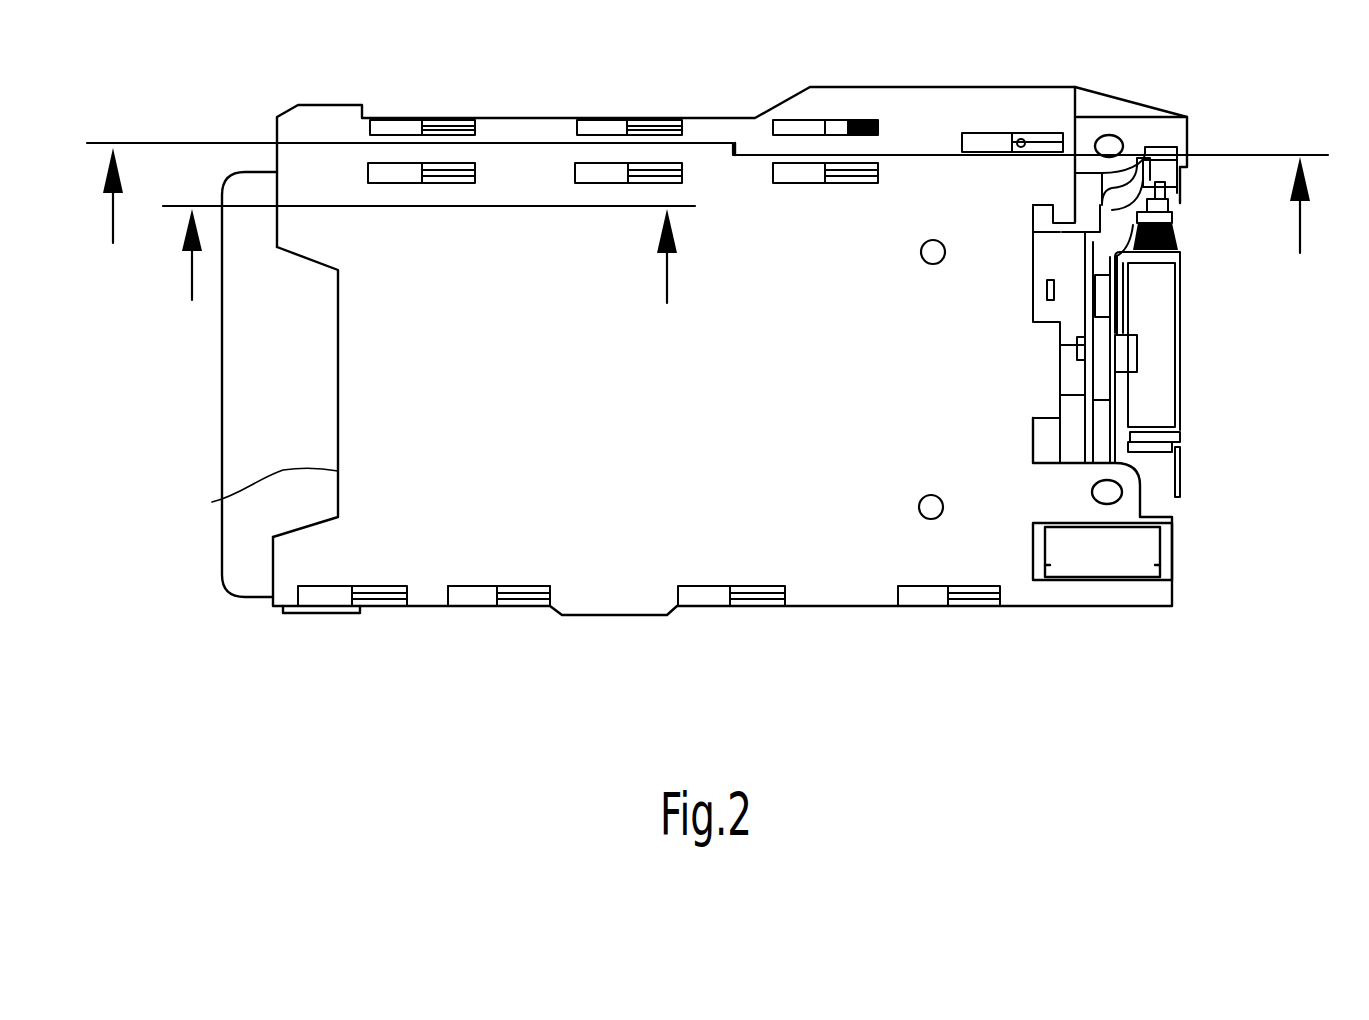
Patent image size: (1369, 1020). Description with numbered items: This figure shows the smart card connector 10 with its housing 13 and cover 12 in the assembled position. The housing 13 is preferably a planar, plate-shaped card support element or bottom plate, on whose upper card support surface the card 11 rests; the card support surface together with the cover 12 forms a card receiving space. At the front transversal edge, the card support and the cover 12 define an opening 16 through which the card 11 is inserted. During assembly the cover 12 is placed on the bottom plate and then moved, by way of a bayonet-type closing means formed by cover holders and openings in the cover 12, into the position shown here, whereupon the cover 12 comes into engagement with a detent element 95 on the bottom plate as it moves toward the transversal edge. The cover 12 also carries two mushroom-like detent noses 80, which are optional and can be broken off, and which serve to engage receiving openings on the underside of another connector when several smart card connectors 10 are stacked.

The smart card connector 10 is at (932, 683).
The card 11 is at (248, 432).
The cover 12 is at (833, 577).
The housing 13 is at (485, 620).
The opening 16 is at (212, 502).
The mushroom-like detent noses 80 is at (921, 250).
The detent element 95 is at (1044, 378).